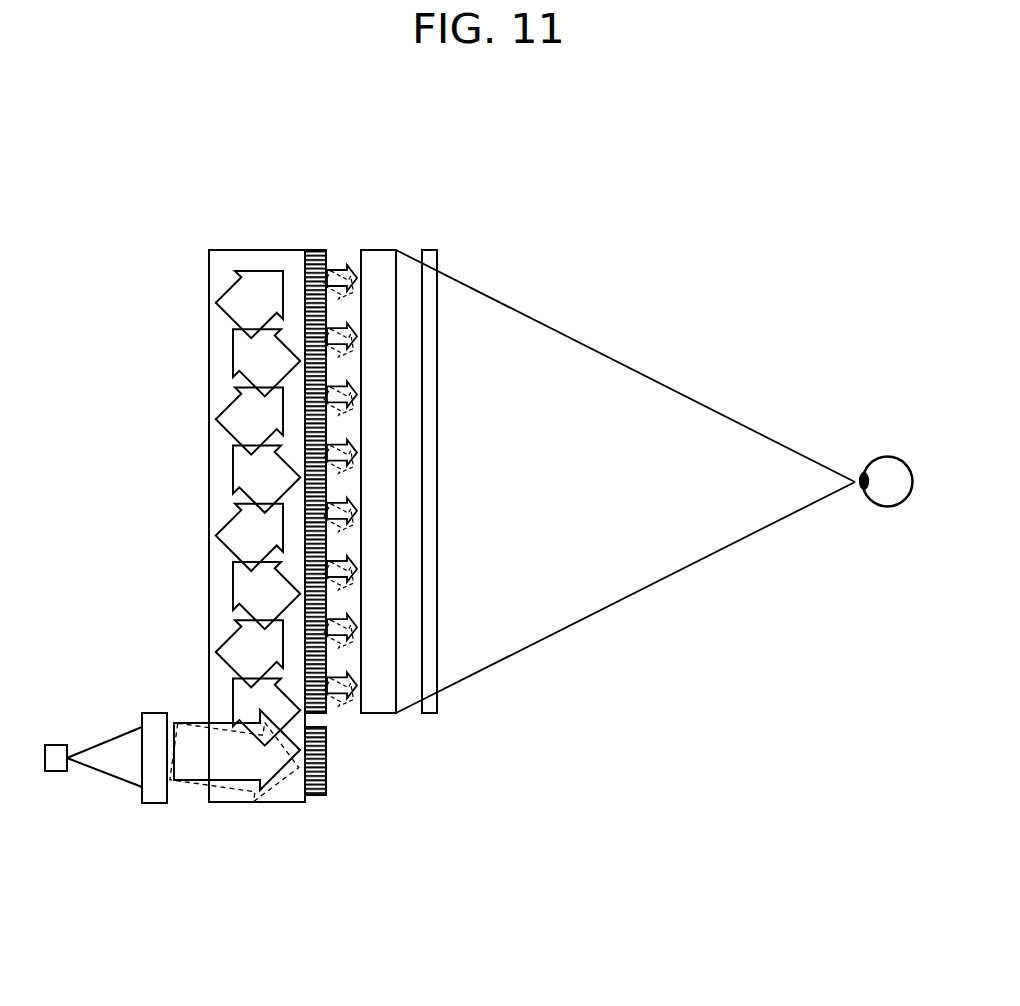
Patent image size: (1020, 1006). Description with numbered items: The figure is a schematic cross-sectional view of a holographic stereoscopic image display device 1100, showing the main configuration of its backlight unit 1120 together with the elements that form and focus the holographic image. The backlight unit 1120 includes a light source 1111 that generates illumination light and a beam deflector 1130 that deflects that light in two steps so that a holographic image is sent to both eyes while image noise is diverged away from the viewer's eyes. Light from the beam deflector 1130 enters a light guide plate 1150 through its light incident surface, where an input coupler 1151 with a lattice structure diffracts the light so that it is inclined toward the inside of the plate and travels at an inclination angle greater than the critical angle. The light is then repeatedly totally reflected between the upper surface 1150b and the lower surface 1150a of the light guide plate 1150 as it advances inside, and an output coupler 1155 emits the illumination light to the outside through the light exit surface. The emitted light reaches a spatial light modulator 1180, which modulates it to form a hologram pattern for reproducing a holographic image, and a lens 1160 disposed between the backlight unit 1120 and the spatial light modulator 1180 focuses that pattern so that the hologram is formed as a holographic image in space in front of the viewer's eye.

The holographic stereoscopic image display device 1100 is at (747, 159).
The light source 1111 is at (55, 755).
The backlight unit 1120 is at (170, 455).
The beam deflector 1130 is at (157, 723).
The light guide plate 1150 is at (223, 260).
The lower surface 1150a is at (207, 792).
The upper surface 1150b is at (307, 720).
The input coupler 1151 is at (326, 775).
The output coupler 1155 is at (315, 263).
The lens 1160 is at (379, 263).
The spatial light modulator 1180 is at (431, 260).